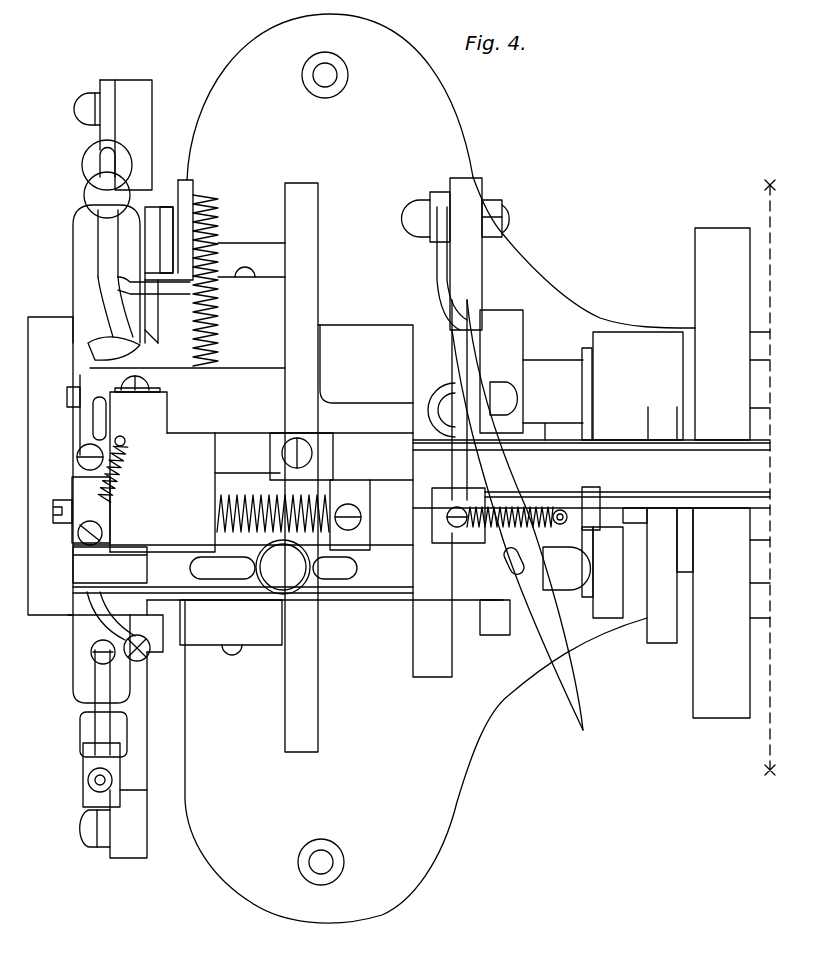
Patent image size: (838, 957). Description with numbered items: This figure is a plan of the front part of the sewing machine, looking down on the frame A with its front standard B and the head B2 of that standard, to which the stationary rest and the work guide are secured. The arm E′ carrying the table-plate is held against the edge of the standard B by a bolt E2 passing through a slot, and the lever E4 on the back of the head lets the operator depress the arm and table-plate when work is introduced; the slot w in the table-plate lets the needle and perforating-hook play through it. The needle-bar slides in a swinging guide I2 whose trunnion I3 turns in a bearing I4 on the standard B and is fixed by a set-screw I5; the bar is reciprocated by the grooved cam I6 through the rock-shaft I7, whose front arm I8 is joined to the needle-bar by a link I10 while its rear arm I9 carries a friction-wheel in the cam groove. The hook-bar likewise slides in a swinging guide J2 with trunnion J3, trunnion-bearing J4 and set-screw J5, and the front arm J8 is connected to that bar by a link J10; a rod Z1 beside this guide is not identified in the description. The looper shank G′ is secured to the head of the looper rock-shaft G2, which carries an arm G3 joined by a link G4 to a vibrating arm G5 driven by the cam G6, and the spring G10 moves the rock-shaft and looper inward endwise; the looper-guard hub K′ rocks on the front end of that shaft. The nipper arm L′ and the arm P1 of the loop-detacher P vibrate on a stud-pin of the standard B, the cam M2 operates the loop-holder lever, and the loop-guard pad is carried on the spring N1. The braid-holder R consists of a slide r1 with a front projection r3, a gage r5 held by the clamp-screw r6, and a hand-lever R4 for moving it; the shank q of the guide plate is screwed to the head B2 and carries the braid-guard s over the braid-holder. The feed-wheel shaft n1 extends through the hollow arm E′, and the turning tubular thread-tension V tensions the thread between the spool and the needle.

The frame A is at (380, 172).
The front standard B is at (290, 467).
The head of front standard B2 is at (187, 460).
The arm of table-plate E′ is at (325, 605).
The bolt E2 is at (120, 414).
The lever E4 is at (461, 555).
The shank of looper G′ is at (452, 400).
The looper rock-shaft G2 is at (448, 515).
The arm of looper rock-shaft G3 is at (533, 508).
The link G4 is at (449, 268).
The vibrating arm G5 is at (456, 254).
The cam G6 is at (475, 373).
The spring G10 is at (293, 512).
The needle-guide I2 is at (105, 274).
The trunnion I3 is at (146, 311).
The trunnion-bearing I4 is at (235, 319).
The set-screw I5 is at (212, 247).
The grooved cam I6 is at (734, 477).
The rock-shaft I7 is at (603, 386).
The front arm of rock-shaft I8 is at (126, 135).
The rear arm of rock-shaft I9 is at (618, 575).
The link I10 is at (94, 109).
The hook-guide J2 is at (99, 686).
The trunnion J3 is at (119, 622).
The trunnion-bearing J4 is at (231, 621).
The set-screw J5 is at (262, 652).
The front arm J8 is at (128, 755).
The link J10 is at (95, 828).
The guard-hub K′ is at (90, 490).
The nipper arm L′ is at (169, 230).
The cam M2 is at (54, 466).
The spring N1 is at (118, 628).
The loop-detacher P is at (151, 280).
The arm P1 is at (175, 240).
The braid-holder R is at (110, 565).
The hand-lever R4 is at (517, 515).
The thread-tension V is at (136, 238).
The rod Z1 is at (101, 728).
The feed-wheel shaft n1 is at (591, 475).
The slide r1 is at (243, 569).
The projection r3 is at (81, 569).
The gage r5 is at (186, 572).
The clamp-screw r6 is at (283, 567).
The braid-guard s is at (87, 556).
The shank of guide q is at (129, 556).
The slot w is at (99, 418).